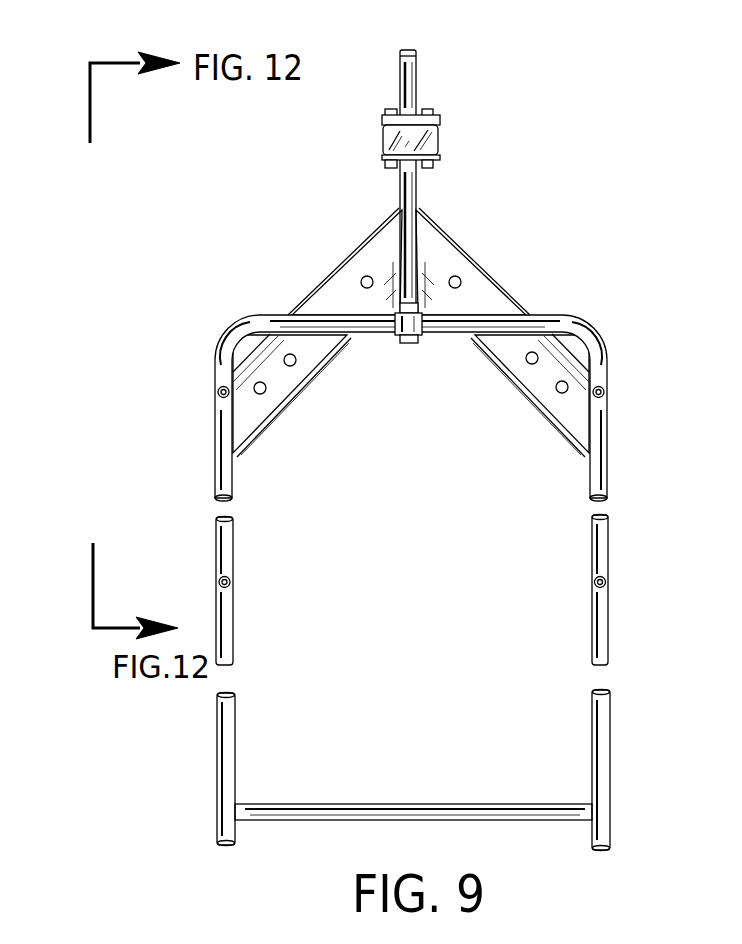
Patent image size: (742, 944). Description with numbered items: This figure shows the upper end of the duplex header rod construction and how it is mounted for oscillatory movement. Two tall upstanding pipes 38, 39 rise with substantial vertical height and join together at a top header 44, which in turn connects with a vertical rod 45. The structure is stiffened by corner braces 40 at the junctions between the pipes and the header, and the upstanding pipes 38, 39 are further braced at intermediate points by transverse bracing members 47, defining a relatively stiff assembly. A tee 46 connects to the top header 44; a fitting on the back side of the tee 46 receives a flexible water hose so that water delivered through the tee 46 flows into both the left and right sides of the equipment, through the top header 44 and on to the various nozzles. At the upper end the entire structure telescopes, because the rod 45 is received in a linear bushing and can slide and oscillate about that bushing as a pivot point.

The upstanding pipe 38 is at (352, 770).
The upstanding pipe 39 is at (472, 590).
The corner brace 40 is at (405, 353).
The top header 44 is at (517, 316).
The vertical rod 45 is at (407, 192).
The tee 46 is at (439, 376).
The transverse bracing member 47 is at (413, 767).